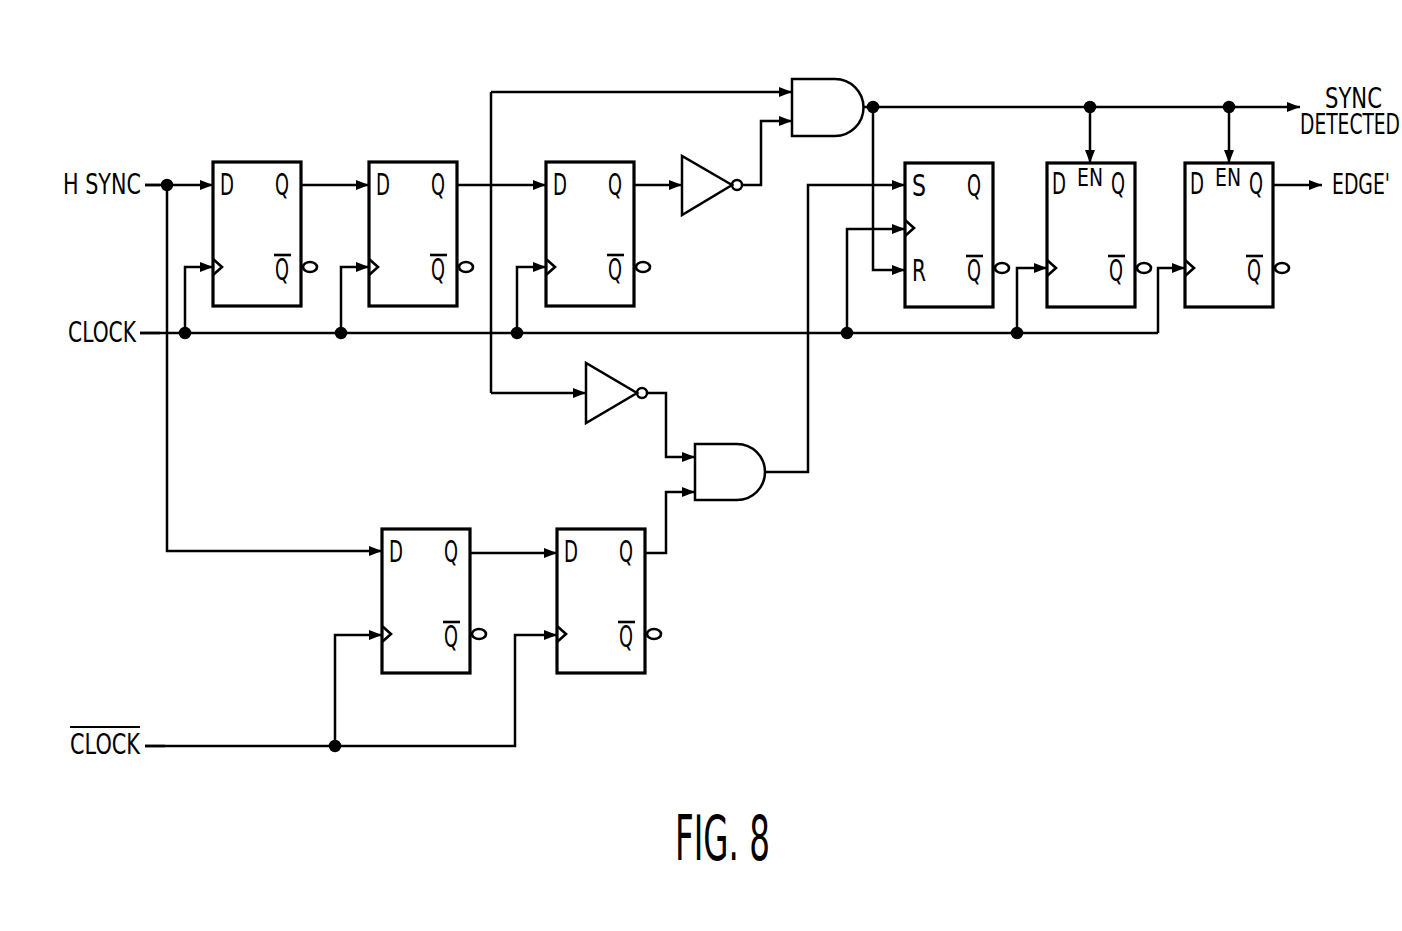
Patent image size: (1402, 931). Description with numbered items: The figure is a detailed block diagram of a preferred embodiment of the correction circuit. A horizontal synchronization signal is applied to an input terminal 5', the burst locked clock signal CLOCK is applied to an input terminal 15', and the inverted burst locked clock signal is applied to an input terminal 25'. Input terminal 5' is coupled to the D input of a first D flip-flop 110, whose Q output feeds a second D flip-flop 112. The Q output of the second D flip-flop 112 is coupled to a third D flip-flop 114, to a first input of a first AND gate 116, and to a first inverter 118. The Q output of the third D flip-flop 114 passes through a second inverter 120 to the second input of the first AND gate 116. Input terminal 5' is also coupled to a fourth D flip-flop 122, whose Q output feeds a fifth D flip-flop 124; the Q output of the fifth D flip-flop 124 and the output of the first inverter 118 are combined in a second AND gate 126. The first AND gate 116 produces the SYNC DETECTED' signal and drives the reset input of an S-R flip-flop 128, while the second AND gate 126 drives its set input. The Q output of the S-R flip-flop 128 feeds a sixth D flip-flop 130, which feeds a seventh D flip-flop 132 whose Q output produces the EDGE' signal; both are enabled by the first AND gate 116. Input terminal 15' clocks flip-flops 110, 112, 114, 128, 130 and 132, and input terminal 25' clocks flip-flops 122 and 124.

The input terminal 5' is at (157, 154).
The input terminal 15' is at (142, 370).
The input terminal 25' is at (164, 712).
The first D flip-flop 110 is at (272, 162).
The second D flip-flop 112 is at (437, 162).
The third D flip-flop 114 is at (607, 162).
The first AND gate 116 is at (812, 79).
The first inverter 118 is at (604, 364).
The second inverter 120 is at (706, 156).
The fourth D flip-flop 122 is at (422, 529).
The fifth D flip-flop 124 is at (612, 529).
The second AND gate 126 is at (706, 444).
The S-R flip-flop 128 is at (925, 163).
The sixth D flip-flop 130 is at (1078, 163).
The seventh D flip-flop 132 is at (1238, 307).